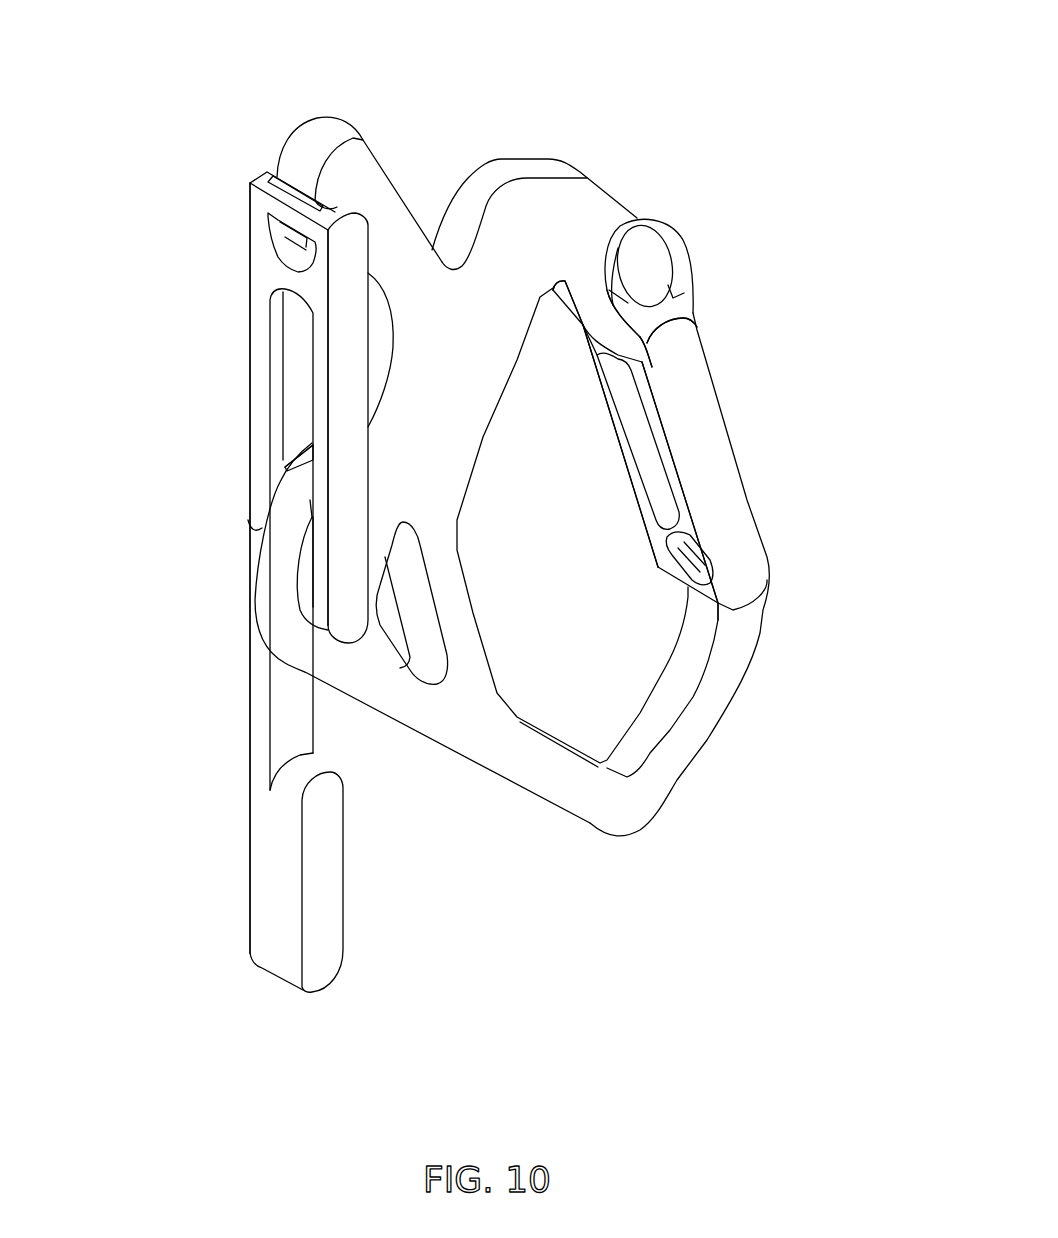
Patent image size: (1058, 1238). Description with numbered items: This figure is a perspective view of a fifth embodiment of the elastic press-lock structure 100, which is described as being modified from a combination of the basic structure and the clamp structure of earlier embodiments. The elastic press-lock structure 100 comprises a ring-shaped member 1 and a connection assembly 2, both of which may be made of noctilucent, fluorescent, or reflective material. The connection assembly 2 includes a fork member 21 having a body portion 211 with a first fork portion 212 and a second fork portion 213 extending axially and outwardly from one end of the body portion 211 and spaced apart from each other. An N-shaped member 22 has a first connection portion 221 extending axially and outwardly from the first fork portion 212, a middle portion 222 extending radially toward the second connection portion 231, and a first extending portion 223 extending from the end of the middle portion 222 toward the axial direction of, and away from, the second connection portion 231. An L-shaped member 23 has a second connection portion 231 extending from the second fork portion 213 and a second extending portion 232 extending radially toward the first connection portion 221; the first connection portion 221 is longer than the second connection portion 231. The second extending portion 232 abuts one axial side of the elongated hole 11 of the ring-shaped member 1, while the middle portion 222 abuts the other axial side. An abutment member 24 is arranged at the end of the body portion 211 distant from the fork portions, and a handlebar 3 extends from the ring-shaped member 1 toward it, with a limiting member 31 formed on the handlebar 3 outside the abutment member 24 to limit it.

The elastic press-lock structure 100 is at (634, 100).
The ring-shaped member 1 is at (692, 253).
The elongated hole 11 is at (673, 290).
The connection assembly 2 is at (858, 583).
The fork member 21 is at (640, 548).
The body portion 211 is at (678, 532).
The first fork portion 212 is at (633, 472).
The second fork portion 213 is at (673, 443).
The N-shaped member 22 is at (575, 343).
The first connection portion 221 is at (593, 370).
The middle portion 222 is at (643, 257).
The first extending portion 223 is at (648, 252).
The L-shaped member 23 is at (693, 312).
The second connection portion 231 is at (628, 325).
The second extending portion 232 is at (610, 300).
The abutment member 24 is at (703, 555).
The handlebar 3 is at (721, 749).
The limiting member 31 is at (683, 550).